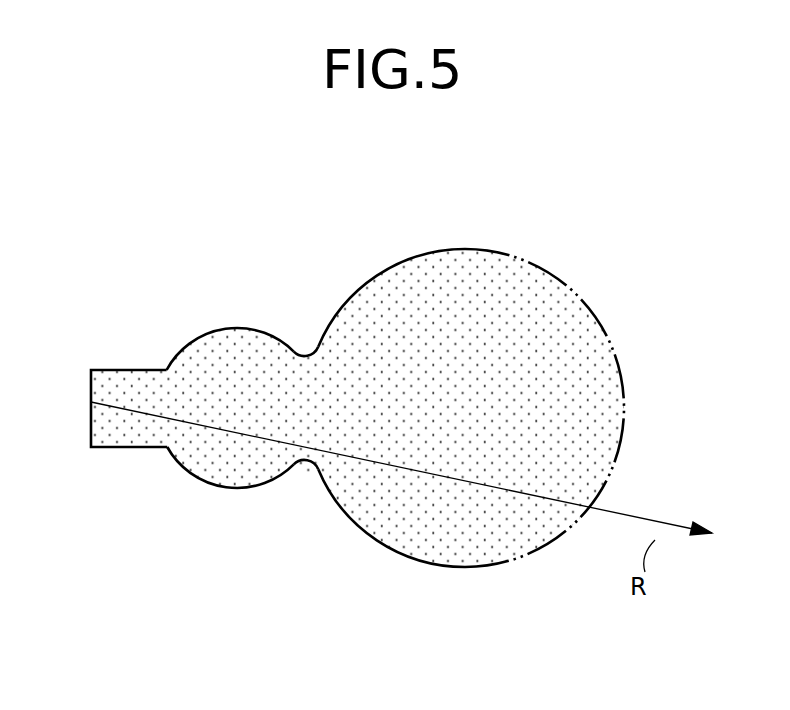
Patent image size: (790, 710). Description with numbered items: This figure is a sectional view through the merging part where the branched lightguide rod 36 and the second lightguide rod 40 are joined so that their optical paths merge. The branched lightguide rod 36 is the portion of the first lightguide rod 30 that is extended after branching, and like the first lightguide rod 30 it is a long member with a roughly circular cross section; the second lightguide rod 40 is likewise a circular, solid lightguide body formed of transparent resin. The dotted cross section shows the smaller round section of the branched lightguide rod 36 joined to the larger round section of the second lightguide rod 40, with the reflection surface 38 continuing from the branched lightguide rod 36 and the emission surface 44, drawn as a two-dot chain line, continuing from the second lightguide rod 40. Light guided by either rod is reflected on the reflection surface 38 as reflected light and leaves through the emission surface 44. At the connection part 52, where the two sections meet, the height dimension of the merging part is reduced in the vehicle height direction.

The first lightguide rod 30 is at (339, 206).
The branched lightguide rod 36 is at (240, 326).
The reflection surface 38 is at (90, 418).
The second lightguide rod 40 is at (423, 250).
The emission surface 44 is at (600, 323).
The connection part 52 is at (305, 463).